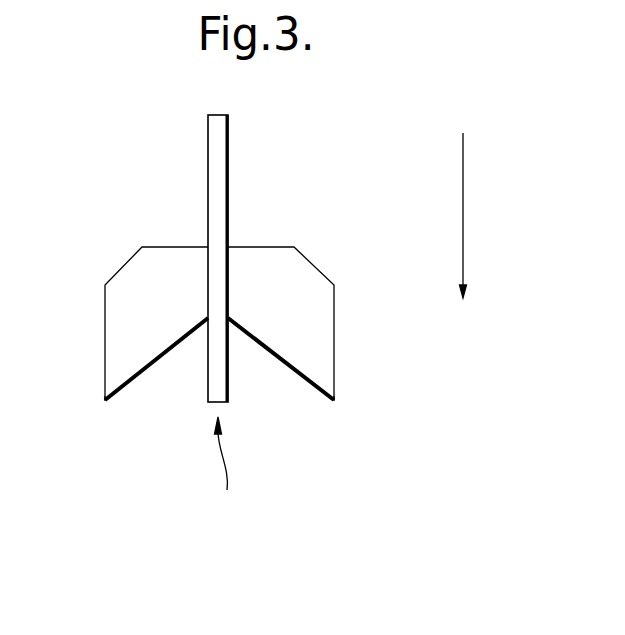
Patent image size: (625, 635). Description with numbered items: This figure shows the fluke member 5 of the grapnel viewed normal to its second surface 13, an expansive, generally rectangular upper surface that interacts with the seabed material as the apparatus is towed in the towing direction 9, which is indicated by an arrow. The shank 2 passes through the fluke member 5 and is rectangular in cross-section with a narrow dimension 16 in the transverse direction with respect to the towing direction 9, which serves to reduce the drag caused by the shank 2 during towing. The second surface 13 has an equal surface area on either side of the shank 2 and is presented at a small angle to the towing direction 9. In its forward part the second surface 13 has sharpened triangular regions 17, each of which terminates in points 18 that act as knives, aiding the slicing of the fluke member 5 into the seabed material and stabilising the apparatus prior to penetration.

The shank 2 is at (218, 170).
The fluke member 5 is at (336, 345).
The towing direction 9 is at (463, 208).
The second surface 13 is at (293, 313).
The narrow dimension 16 is at (221, 470).
The sharpened triangular regions 17 is at (112, 357).
The points 18 is at (105, 403).